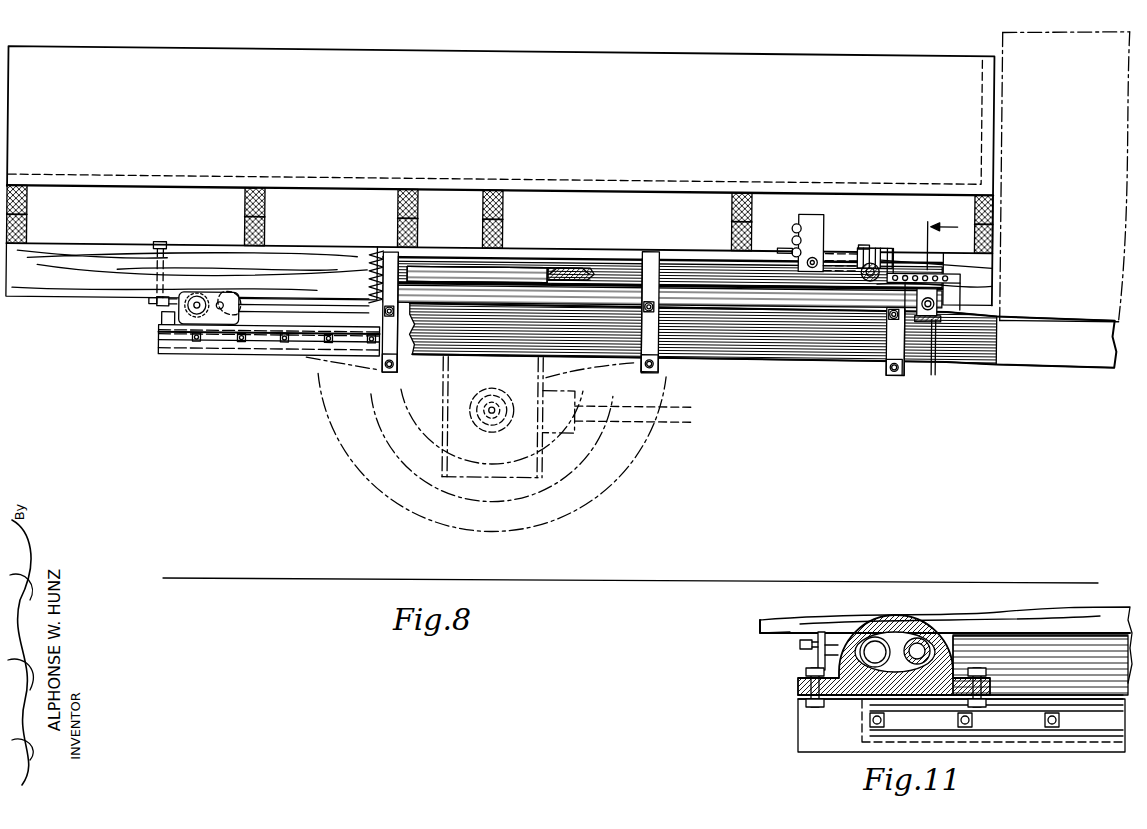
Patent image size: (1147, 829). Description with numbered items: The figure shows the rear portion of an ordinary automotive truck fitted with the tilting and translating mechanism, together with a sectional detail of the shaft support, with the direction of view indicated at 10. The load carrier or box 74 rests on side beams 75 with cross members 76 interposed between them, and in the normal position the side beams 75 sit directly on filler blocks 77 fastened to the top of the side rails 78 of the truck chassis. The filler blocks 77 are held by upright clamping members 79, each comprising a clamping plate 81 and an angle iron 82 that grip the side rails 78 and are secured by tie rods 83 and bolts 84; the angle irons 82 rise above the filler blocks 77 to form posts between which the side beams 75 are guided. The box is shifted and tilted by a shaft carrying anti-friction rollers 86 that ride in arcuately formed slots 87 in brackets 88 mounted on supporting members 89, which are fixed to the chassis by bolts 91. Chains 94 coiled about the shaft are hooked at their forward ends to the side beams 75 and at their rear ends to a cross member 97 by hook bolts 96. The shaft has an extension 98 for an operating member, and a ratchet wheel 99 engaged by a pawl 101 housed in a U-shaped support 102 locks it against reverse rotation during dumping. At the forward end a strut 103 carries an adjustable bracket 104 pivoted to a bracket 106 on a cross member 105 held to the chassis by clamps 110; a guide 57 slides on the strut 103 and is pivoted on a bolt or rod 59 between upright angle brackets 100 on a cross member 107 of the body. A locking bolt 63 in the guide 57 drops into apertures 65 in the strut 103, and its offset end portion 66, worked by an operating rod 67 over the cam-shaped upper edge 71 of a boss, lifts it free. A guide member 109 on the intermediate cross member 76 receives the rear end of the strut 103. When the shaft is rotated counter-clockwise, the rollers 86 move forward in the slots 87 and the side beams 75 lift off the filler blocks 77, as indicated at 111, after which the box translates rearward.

In FIG. 8, the direction arrow / line of sight 10 is at (936, 235).
In FIG. 8, the guide 57 is at (820, 243).
In FIG. 8, the bolt or rod 59 is at (828, 243).
In FIG. 8, the locking bolt 63 is at (866, 268).
In FIG. 8, the apertures 65 is at (873, 272).
In FIG. 8, the offset end portion 66 is at (884, 239).
In FIG. 8, the operating rod 67 is at (866, 236).
In FIG. 8, the upper edge 71 is at (892, 239).
In FIG. 8, the load carrier or box 74 is at (450, 46).
In FIG. 8, the side beams 75 is at (65, 292).
In FIG. 11, the side beams 75 is at (1103, 616).
In FIG. 8, the cross members 76 is at (29, 222).
In FIG. 8, the filler blocks 77 is at (280, 340).
In FIG. 11, the filler blocks 77 is at (1045, 668).
In FIG. 8, the side rails 78 is at (775, 345).
In FIG. 11, the side rails 78 is at (805, 734).
In FIG. 8, the upright clamping members 79 is at (382, 372).
In FIG. 8, the clamping plate 81 is at (661, 366).
In FIG. 8, the angle iron 82 is at (393, 370).
In FIG. 8, the tie rods 83 is at (400, 308).
In FIG. 8, the bolts 84 is at (398, 362).
In FIG. 11, the anti-friction rollers 86 is at (930, 642).
In FIG. 11, the arcuately formed slots 87 is at (880, 638).
In FIG. 8, the brackets 88 is at (165, 318).
In FIG. 11, the brackets 88 is at (912, 621).
In FIG. 8, the supporting members 89 is at (172, 342).
In FIG. 8, the bolts 91 is at (244, 340).
In FIG. 11, the bolts 91 is at (872, 728).
In FIG. 8, the chains 94 is at (558, 262).
In FIG. 11, the chains 94 is at (822, 631).
In FIG. 8, the hook bolts 96 is at (160, 300).
In FIG. 11, the hook bolts 96 is at (800, 645).
In FIG. 8, the cross member 97 is at (152, 299).
In FIG. 11, the cross member 97 is at (785, 633).
In FIG. 8, the shaft extension 98 is at (203, 300).
In FIG. 8, the ratchet wheel 99 is at (195, 290).
In FIG. 8, the upright angle brackets 100 is at (816, 206).
In FIG. 8, the pawl 101 is at (260, 302).
In FIG. 8, the U-shaped support 102 is at (227, 300).
In FIG. 8, the strut 103 is at (588, 266).
In FIG. 8, the bracket 104 is at (963, 269).
In FIG. 8, the cross member 105 is at (945, 305).
In FIG. 8, the bracket 106 is at (936, 312).
In FIG. 8, the cross member 107 is at (795, 228).
In FIG. 8, the guide member 109 is at (466, 240).
In FIG. 8, the clamps 110 is at (938, 366).
In FIG. 11, the indication of separation 111 is at (1048, 636).